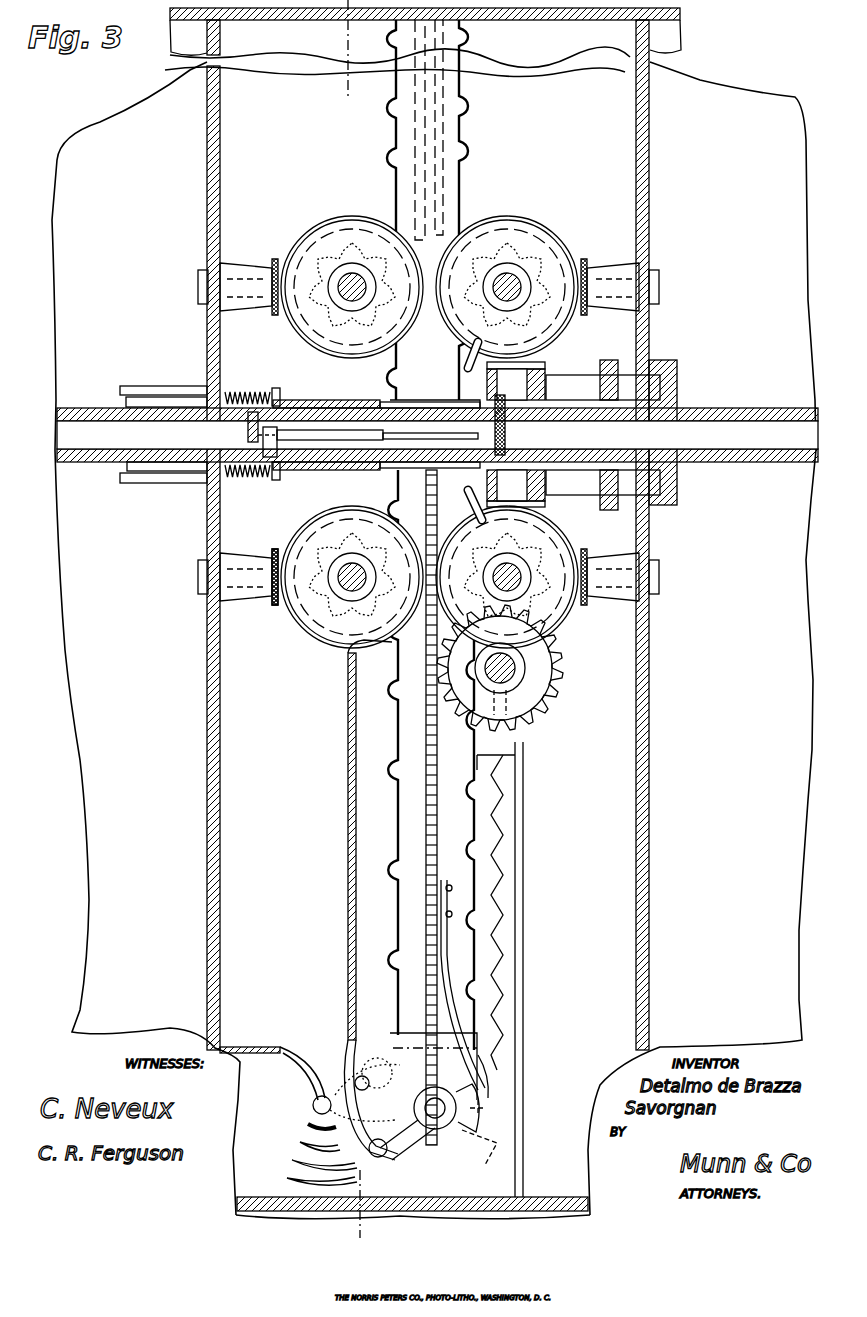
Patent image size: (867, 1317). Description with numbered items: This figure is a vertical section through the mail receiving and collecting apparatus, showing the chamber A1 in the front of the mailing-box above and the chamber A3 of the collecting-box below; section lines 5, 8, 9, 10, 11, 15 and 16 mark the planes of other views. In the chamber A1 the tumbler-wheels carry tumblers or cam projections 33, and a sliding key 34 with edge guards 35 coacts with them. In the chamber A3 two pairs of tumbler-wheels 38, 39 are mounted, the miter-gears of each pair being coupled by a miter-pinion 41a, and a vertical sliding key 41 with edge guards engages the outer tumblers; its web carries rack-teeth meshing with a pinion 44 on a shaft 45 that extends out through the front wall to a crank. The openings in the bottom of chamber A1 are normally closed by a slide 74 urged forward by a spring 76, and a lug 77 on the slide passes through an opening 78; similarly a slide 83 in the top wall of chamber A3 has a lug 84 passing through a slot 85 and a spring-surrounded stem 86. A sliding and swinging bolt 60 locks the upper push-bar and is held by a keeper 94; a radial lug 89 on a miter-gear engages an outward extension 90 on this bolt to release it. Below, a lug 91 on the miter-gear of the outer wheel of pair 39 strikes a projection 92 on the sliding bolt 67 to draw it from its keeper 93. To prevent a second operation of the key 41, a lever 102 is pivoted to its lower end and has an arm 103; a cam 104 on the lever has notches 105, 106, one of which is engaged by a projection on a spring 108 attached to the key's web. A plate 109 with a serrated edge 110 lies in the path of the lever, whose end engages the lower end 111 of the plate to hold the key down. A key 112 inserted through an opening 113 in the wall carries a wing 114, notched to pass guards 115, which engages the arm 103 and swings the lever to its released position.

The section line 5 is at (386, 1206).
The section line 8 is at (821, 302).
The section line 9 is at (810, 355).
The section line 10 is at (830, 438).
The section line 11 is at (125, 507).
The section line 15 is at (825, 590).
The section line 16 is at (815, 1015).
The tumblers or cam projections 33 is at (540, 268).
The sliding key 34 is at (463, 150).
The guards 35 is at (470, 112).
The tumbler-wheels 38 is at (332, 535).
The tumbler-wheels 39 is at (535, 555).
The sliding key 41 is at (478, 856).
The miter-pinion 41a is at (278, 552).
The pinion 44 is at (560, 680).
The shaft 45 is at (172, 386).
The sliding and swinging bolt 60 is at (578, 378).
The sliding bolt 67 is at (603, 482).
The slide 74 is at (312, 400).
The spring 76 is at (248, 390).
The lug 77 is at (248, 436).
The opening 78 is at (362, 400).
The slide 83 is at (358, 470).
The lug 84 is at (280, 436).
The slot 85 is at (368, 450).
The stem 86 is at (160, 480).
The lug 89 is at (466, 360).
The outward extension 90 is at (487, 374).
The lug 91 is at (466, 506).
The projection 92 is at (546, 500).
The keeper 93 is at (677, 490).
The keeper 94 is at (677, 378).
The lever 102 is at (458, 1090).
The arm 103 is at (395, 1150).
The cam 104 is at (480, 1150).
The notch 105 is at (476, 1112).
The notch 106 is at (436, 1085).
The spring 108 is at (460, 1010).
The plate 109 is at (522, 924).
The serrated edge 110 is at (500, 898).
The lower end of plate 111 is at (490, 1080).
The key 112 is at (313, 1108).
The opening 113 is at (300, 1055).
The wing 114 is at (300, 1145).
The guards 115 is at (287, 1180).
The chamber A1 is at (298, 199).
The chamber A3 is at (343, 900).